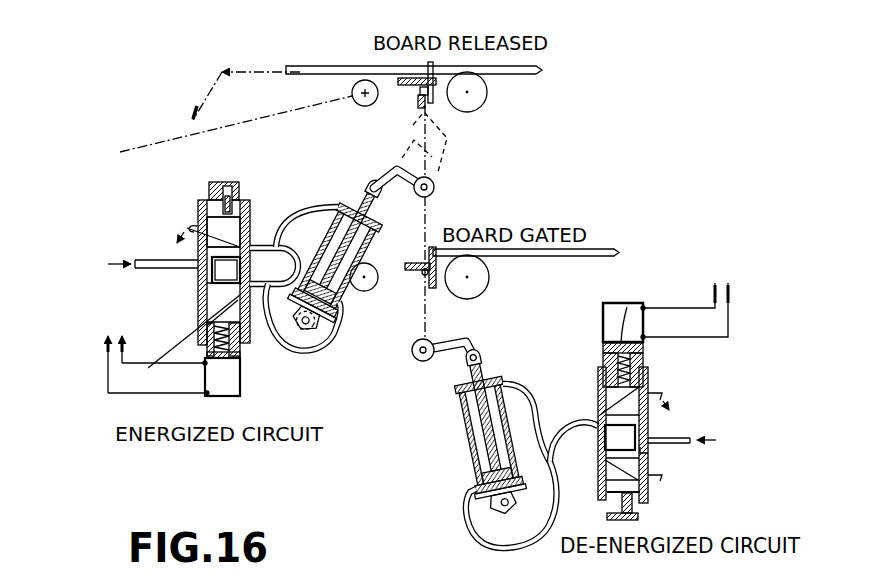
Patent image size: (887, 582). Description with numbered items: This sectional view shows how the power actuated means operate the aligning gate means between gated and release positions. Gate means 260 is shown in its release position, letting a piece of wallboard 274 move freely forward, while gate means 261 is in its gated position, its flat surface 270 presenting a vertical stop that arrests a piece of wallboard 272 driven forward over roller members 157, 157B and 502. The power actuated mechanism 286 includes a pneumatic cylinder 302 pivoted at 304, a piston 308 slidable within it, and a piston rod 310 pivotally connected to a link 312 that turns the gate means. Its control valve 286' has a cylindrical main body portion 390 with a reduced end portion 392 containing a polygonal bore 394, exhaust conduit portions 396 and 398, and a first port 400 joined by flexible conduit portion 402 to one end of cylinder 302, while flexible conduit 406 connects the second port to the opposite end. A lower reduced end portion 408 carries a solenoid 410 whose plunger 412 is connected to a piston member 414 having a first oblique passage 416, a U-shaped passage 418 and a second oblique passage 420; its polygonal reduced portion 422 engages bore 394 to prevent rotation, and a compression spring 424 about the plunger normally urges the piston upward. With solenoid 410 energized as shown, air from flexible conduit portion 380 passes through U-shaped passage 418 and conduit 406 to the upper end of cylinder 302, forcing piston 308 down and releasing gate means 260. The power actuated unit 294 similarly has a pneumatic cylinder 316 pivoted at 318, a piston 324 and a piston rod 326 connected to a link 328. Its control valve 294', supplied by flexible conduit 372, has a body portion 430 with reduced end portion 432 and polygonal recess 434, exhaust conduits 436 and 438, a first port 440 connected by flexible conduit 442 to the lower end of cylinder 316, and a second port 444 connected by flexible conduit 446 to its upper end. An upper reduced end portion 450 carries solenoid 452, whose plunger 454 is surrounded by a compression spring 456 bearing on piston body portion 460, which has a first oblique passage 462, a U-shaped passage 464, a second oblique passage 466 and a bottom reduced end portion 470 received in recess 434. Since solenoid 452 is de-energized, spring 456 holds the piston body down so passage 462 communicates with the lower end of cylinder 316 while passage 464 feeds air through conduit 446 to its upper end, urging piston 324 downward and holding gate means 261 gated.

The roller 157 is at (488, 100).
The roller 157B is at (478, 272).
The aligning gate means 260 is at (413, 91).
The aligning gate means 261 is at (412, 272).
The flat surface 270 is at (407, 78).
The piece of wallboard 272 is at (600, 249).
The piece of wallboard 274 is at (518, 72).
The power actuated mechanism 286 is at (328, 151).
The control valve 286' is at (162, 185).
The power actuated unit 294 is at (500, 337).
The control valve 294' is at (681, 354).
The pneumatic cylinder 302 is at (372, 243).
The pivot 304 is at (302, 327).
The piston 308 is at (330, 303).
The piston rod 310 is at (372, 196).
The link 312 is at (386, 176).
The pneumatic cylinder 316 is at (468, 445).
The pivot 318 is at (498, 510).
The piston 324 is at (486, 476).
The piston rod 326 is at (462, 422).
The link 328 is at (458, 353).
The flexible conduit 372 is at (660, 438).
The flexible conduit portion 380 is at (145, 263).
The main body portion 390 is at (244, 195).
The reduced end portion 392 is at (226, 182).
The bore 394 is at (210, 185).
The exhaust conduit portion 396 is at (196, 228).
The exhaust conduit portion 398 is at (200, 306).
The first port 400 is at (255, 266).
The flexible conduit portion 402 is at (281, 238).
The flexible conduit 406 is at (347, 187).
The reduced end portion 408 is at (240, 356).
The solenoid 410 is at (235, 396).
The plunger 412 is at (238, 362).
The piston member 414 is at (139, 349).
The first oblique passage 416 is at (202, 324).
The U-shaped passage 418 is at (199, 270).
The second oblique passage 420 is at (247, 212).
The reduced portion 422 is at (243, 192).
The compression spring member 424 is at (181, 343).
The body portion 430 is at (652, 490).
The reduced end portion 432 is at (643, 518).
The recess 434 is at (614, 512).
The exhaust conduit 436 is at (661, 468).
The exhaust conduit 438 is at (655, 393).
The first port 440 is at (598, 413).
The flexible conduit 442 is at (487, 538).
The second port 444 is at (588, 462).
The flexible conduit 446 is at (517, 382).
The reduced end portion 450 is at (643, 336).
The solenoid 452 is at (612, 303).
The plunger 454 is at (627, 307).
The compression spring 456 is at (603, 344).
The piston body portion 460 is at (604, 352).
The first oblique passage 462 is at (604, 394).
The U-shaped passage 464 is at (648, 457).
The second oblique passage 466 is at (605, 475).
The reduced end portion 470 is at (641, 508).
The roller 502 is at (352, 87).